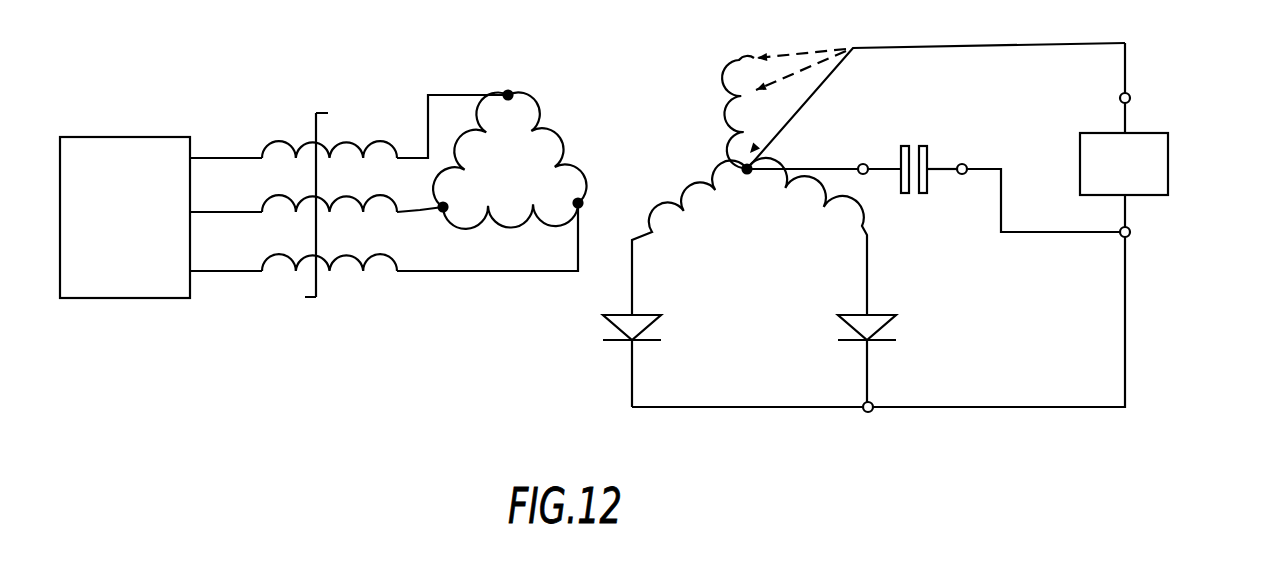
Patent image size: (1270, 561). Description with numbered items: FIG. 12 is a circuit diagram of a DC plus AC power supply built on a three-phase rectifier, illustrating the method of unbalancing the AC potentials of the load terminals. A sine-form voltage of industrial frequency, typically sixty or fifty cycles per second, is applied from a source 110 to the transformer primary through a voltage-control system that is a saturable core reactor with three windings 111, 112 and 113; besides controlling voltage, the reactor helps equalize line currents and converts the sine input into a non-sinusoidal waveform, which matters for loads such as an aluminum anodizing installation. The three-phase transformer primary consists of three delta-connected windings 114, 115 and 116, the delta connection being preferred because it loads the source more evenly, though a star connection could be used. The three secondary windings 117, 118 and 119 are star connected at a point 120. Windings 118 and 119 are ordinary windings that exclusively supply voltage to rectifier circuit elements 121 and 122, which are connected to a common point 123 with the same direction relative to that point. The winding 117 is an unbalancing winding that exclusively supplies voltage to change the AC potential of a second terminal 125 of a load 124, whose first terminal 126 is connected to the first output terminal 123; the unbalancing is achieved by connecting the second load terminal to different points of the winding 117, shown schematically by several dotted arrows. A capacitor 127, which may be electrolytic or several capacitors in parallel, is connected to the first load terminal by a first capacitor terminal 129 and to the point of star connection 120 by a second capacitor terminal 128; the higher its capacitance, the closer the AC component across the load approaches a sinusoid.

The source 110 is at (130, 137).
The saturable core reactor winding 111 is at (352, 140).
The saturable core reactor winding 112 is at (303, 198).
The saturable core reactor winding 113 is at (297, 262).
The Δ-connected primary winding 114 is at (476, 123).
The Δ-connected primary winding 115 is at (543, 117).
The Δ-connected primary winding 116 is at (517, 226).
The unbalancing winding 117 is at (732, 100).
The secondary winding 118 is at (857, 213).
The secondary winding 119 is at (717, 212).
The point of star connection 120 is at (747, 168).
The rectifier circuit element 121 is at (612, 318).
The rectifier circuit element 122 is at (855, 313).
The common point 123 is at (873, 402).
The load 124 is at (1170, 168).
The second terminal of the load 125 is at (1130, 93).
The first terminal of the load 126 is at (1131, 228).
The capacitor 127 is at (930, 150).
The second capacitor terminal 128 is at (862, 163).
The first capacitor terminal 129 is at (970, 166).